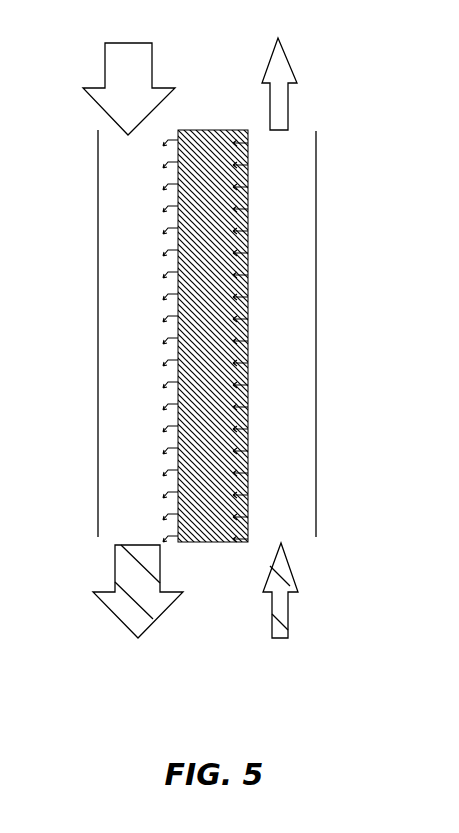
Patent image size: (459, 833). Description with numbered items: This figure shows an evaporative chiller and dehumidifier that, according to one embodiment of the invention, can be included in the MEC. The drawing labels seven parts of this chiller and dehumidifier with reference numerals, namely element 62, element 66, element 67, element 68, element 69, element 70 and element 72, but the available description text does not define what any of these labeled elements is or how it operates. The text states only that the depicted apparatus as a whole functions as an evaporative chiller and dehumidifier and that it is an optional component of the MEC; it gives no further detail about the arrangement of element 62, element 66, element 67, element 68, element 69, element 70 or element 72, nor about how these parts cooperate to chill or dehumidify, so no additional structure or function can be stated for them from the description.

The wall / plate 62 is at (318, 152).
The hatched layer 66 is at (192, 138).
The upward flow arrow 67 is at (282, 43).
The upward flow arrow 68 is at (281, 639).
The downward flow arrow 69 is at (128, 43).
The downward flow arrow 70 is at (118, 619).
The wall 72 is at (94, 158).